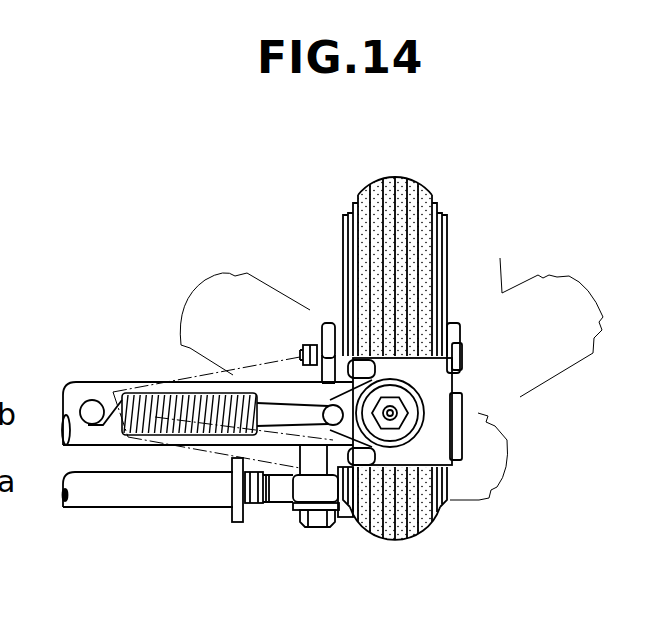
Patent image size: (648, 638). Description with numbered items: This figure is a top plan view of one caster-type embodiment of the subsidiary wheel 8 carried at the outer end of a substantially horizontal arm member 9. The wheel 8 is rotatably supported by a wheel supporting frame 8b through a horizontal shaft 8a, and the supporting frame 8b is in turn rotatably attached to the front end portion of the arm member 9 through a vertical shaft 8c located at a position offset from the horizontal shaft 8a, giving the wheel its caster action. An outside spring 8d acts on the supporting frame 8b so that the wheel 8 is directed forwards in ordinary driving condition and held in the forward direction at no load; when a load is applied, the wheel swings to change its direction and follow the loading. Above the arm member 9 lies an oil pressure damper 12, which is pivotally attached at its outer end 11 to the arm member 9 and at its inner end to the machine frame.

The subsidiary wheel 8 is at (413, 243).
The horizontal shaft 8a is at (498, 298).
The wheel supporting frame 8b is at (460, 440).
The vertical shaft 8c is at (393, 407).
The outside spring 8d is at (157, 393).
The arm member 9 is at (92, 404).
The outer end of damper 11 is at (323, 544).
The oil pressure damper 12 is at (185, 506).